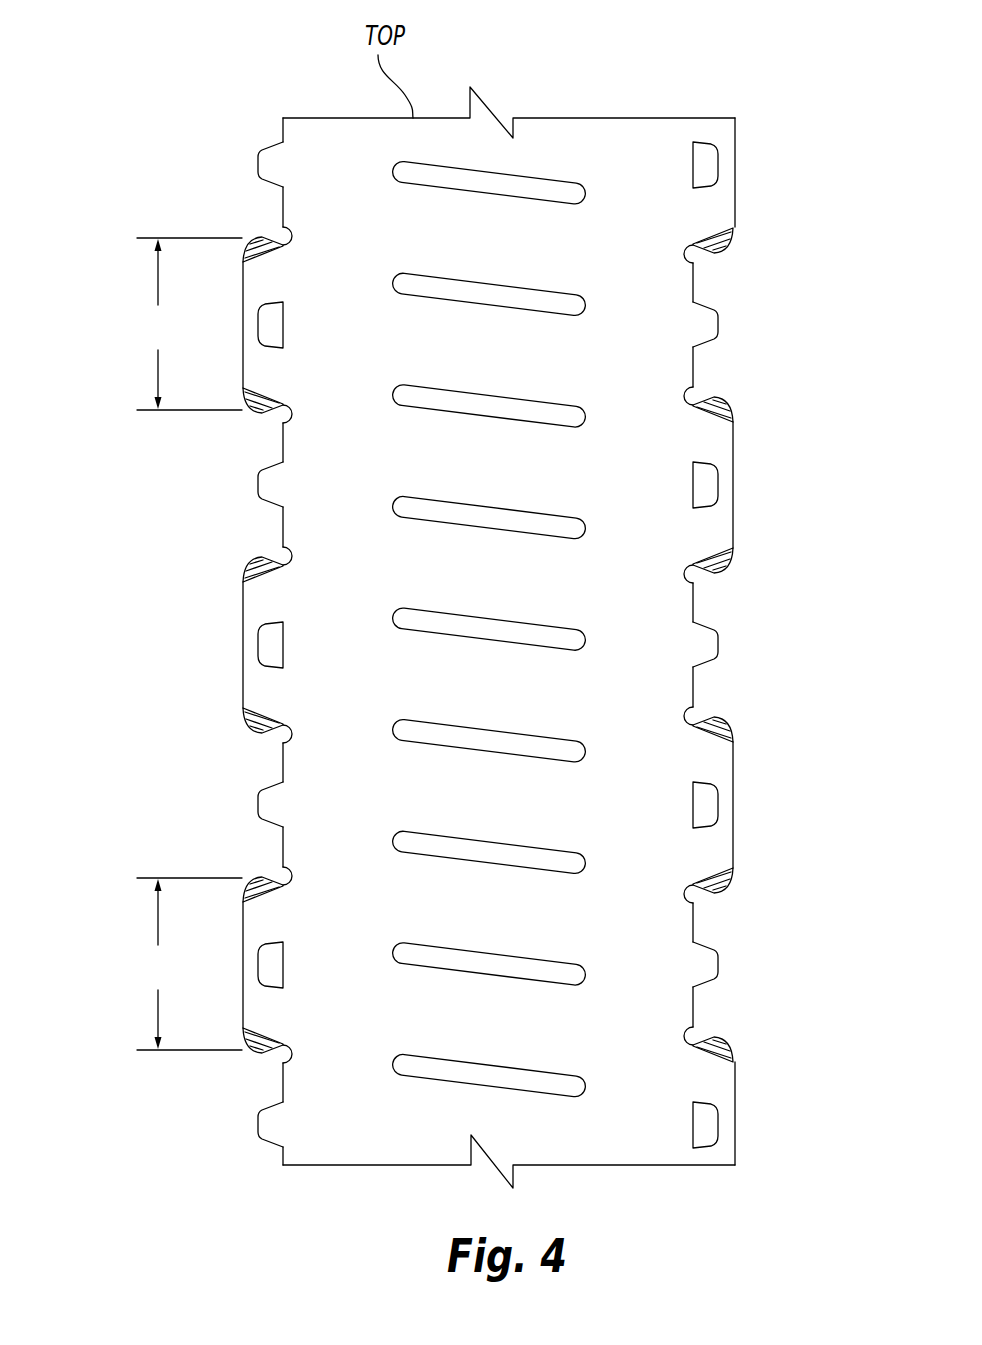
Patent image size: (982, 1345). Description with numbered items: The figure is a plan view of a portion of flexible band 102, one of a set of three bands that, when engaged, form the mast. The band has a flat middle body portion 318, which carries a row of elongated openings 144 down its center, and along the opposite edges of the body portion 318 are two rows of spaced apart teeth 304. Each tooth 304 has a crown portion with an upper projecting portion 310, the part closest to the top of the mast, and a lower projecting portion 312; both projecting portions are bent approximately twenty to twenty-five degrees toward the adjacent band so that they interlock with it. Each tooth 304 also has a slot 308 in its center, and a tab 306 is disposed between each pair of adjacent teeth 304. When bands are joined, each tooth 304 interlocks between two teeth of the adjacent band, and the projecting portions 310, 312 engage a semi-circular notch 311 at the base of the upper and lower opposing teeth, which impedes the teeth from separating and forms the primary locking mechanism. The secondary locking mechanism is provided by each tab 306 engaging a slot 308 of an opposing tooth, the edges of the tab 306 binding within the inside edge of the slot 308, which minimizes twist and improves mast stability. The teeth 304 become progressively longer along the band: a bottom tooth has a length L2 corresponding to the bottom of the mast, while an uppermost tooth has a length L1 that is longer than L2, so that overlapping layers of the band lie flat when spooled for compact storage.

The flexible band 102 is at (275, 80).
The elongated slots 144 is at (540, 178).
The tooth 304 is at (205, 698).
The tab 306 is at (256, 485).
The slot 308 is at (253, 645).
The upper projecting portion 310 is at (254, 558).
The notch 311 is at (697, 573).
The lower projecting portion 312 is at (253, 730).
The flat middle body portion 318 is at (518, 583).
The length of uppermost tooth L1 is at (189, 324).
The length of bottom tooth L2 is at (189, 964).